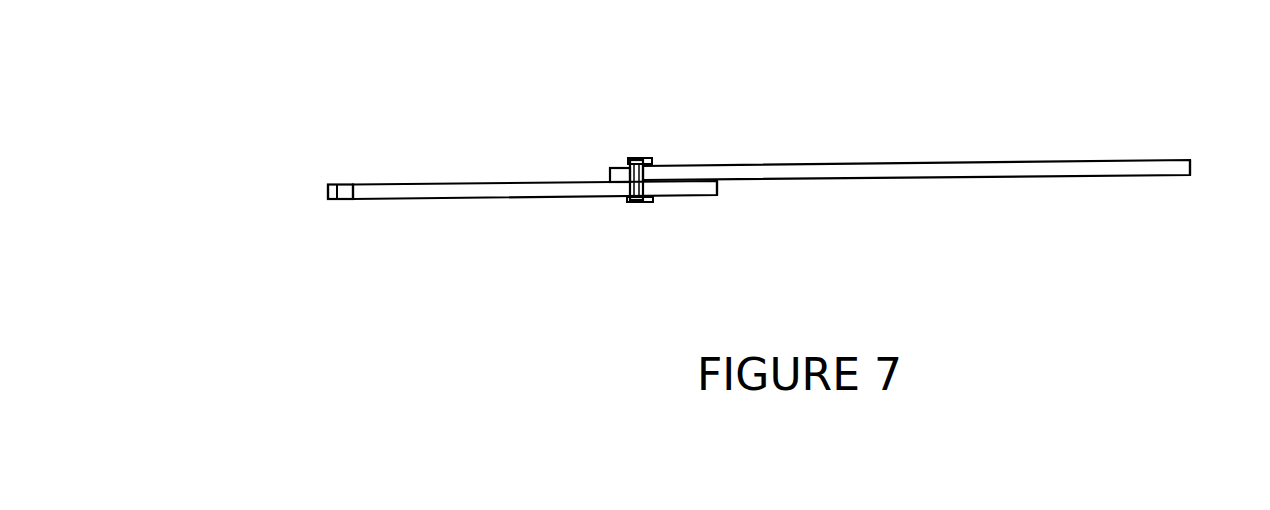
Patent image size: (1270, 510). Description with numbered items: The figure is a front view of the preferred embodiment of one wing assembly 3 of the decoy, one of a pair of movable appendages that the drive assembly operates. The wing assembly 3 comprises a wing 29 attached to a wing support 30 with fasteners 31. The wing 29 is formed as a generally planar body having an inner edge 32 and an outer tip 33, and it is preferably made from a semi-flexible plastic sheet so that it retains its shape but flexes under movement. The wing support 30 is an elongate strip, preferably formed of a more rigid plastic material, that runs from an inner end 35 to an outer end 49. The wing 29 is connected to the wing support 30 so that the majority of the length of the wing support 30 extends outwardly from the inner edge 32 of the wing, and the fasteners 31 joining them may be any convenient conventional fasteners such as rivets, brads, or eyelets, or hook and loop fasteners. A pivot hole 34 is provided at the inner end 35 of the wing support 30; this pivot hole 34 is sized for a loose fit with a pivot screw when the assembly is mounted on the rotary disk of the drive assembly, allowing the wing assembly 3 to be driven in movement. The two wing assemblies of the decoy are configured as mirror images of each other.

The wing assembly 3 is at (677, 214).
The wing 29 is at (867, 165).
The wing support 30 is at (518, 190).
The fasteners 31 is at (640, 162).
The inner edge 32 is at (610, 168).
The outer tip 33 is at (1192, 164).
The pivot hole 34 is at (343, 186).
The inner end 35 is at (328, 192).
The outer end 49 is at (717, 189).